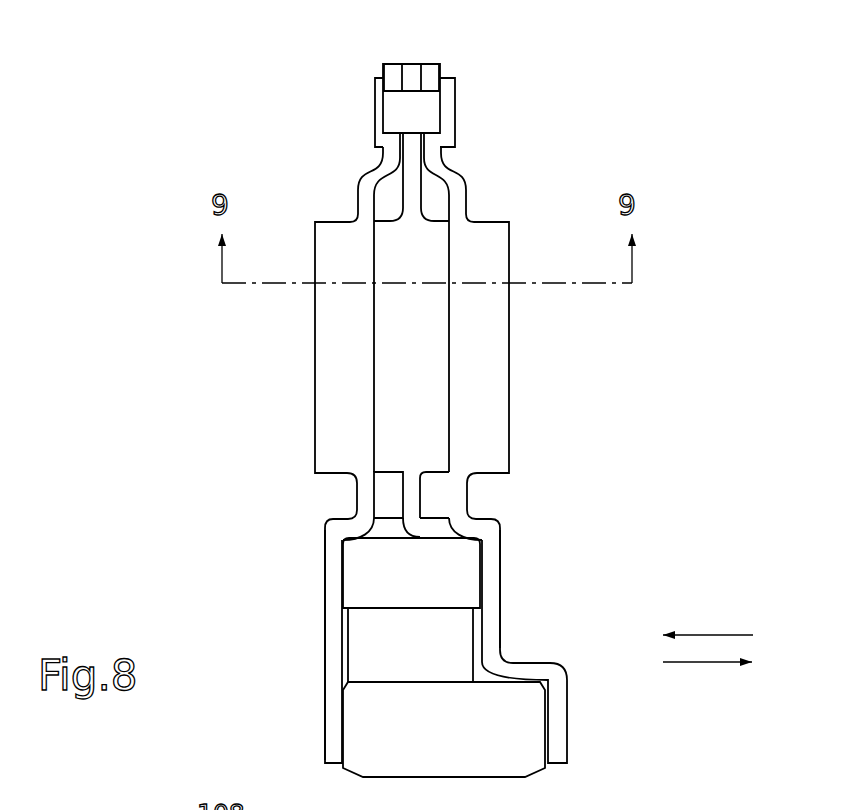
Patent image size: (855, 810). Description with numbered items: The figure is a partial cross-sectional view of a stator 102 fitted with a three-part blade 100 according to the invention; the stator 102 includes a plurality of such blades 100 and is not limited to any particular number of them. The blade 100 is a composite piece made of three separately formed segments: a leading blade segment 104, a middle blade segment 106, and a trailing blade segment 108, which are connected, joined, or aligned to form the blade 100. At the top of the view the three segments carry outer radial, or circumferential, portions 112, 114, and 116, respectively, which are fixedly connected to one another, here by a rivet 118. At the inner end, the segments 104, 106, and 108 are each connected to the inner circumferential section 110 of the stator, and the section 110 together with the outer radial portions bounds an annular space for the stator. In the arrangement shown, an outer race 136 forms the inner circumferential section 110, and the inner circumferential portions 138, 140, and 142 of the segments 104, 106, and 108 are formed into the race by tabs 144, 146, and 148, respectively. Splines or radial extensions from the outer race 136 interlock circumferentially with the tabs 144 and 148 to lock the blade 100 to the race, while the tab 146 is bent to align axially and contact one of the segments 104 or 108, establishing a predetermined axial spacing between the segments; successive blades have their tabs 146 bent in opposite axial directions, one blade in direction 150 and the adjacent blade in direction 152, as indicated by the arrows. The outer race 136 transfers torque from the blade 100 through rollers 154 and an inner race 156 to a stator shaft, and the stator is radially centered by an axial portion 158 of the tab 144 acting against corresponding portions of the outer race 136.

The three-part blade 100 is at (558, 160).
The stator 102 is at (205, 135).
The leading blade segment 104 is at (512, 318).
The middle blade segment 106 is at (450, 339).
The trailing blade segment 108 is at (315, 322).
The inner circumferential section 110 is at (180, 542).
The outer radial portion 112 is at (435, 62).
The outer radial portion 114 is at (410, 63).
The outer radial portion 116 is at (383, 63).
The rivet 118 is at (455, 107).
The outer race 136 is at (383, 589).
The inner circumferential portion 138 is at (457, 497).
The inner circumferential portion 140 is at (415, 498).
The inner circumferential portion 142 is at (358, 506).
The tab 144 is at (492, 568).
The tab 146 is at (433, 532).
The tab 148 is at (333, 655).
The direction 150 is at (697, 663).
The direction 152 is at (717, 635).
The rollers 154 is at (380, 660).
The inner race 156 is at (408, 741).
The axial portion 158 is at (522, 666).